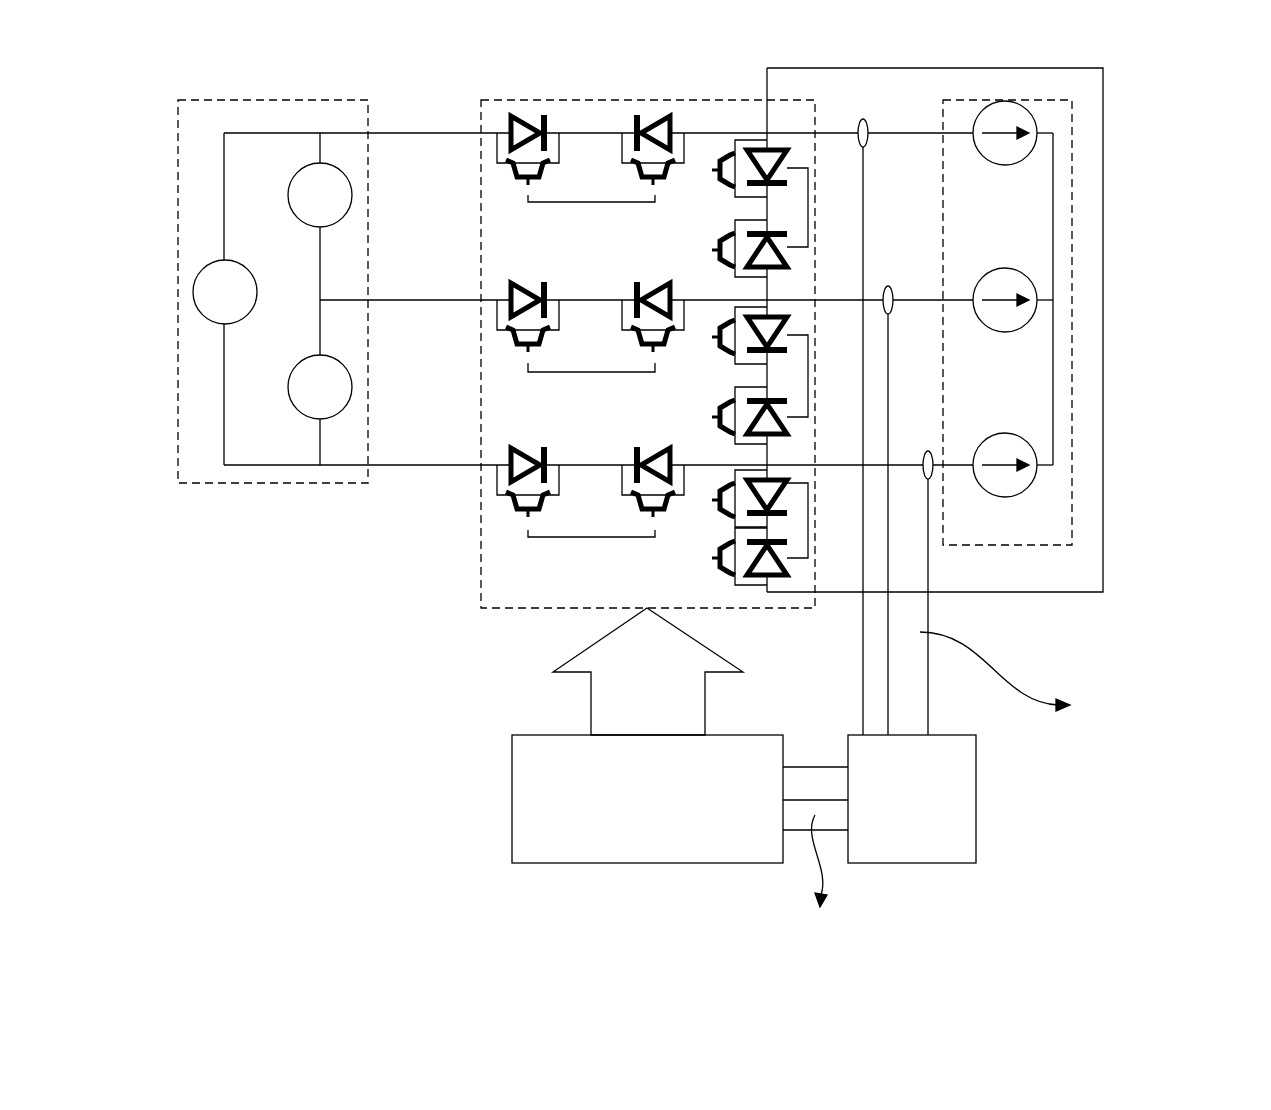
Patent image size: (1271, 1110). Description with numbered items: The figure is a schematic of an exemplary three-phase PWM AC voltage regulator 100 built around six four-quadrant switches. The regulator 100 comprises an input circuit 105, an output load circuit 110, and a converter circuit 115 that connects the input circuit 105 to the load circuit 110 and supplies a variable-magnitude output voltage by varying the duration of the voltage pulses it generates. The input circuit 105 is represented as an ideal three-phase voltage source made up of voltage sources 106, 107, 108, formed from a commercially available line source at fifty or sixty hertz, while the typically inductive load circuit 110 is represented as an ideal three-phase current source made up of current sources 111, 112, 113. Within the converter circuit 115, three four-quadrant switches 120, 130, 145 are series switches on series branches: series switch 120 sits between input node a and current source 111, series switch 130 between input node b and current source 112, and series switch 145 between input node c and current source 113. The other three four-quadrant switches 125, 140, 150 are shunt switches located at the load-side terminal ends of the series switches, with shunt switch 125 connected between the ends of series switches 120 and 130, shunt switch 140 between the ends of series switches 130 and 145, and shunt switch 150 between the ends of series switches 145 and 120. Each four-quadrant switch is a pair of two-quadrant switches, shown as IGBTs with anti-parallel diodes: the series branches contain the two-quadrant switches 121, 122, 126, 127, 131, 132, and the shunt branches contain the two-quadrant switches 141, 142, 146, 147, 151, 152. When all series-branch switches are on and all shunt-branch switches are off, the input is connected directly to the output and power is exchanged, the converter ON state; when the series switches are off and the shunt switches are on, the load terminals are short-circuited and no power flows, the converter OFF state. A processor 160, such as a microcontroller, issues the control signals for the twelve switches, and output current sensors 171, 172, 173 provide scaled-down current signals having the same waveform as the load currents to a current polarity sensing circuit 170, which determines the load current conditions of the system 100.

The three-phase PWM AC voltage regulator 100 is at (1216, 64).
The input circuit 105 is at (277, 100).
The voltage source 106 is at (316, 208).
The voltage source 107 is at (316, 401).
The voltage source 108 is at (237, 305).
The output load circuit 110 is at (1003, 101).
The current source 111 is at (1018, 156).
The current source 112 is at (1010, 297).
The current source 113 is at (1010, 459).
The converter circuit 115 is at (652, 101).
The four-quadrant switch 120 is at (590, 162).
The two-quadrant switch s1 121 is at (653, 142).
The two-quadrant switch s2 122 is at (528, 142).
The four-quadrant switch 125 is at (771, 208).
The two-quadrant switch s5 126 is at (653, 303).
The two-quadrant switch s6 127 is at (528, 303).
The four-quadrant switch 130 is at (590, 322).
The two-quadrant switch s9 131 is at (653, 469).
The two-quadrant switch s10 132 is at (528, 469).
The four-quadrant switch 140 is at (772, 374).
The two-quadrant switch s3 141 is at (740, 170).
The two-quadrant switch s4 142 is at (740, 248).
The four-quadrant switch 145 is at (590, 489).
The two-quadrant switch s7 146 is at (742, 337).
The two-quadrant switch s8 147 is at (742, 416).
The four-quadrant switch 150 is at (764, 527).
The two-quadrant switch s11 151 is at (742, 498).
The two-quadrant switch s12 152 is at (742, 558).
The processor 160 is at (680, 735).
The current polarity sensing circuit 170 is at (912, 799).
The current sensor CSa 171 is at (883, 420).
The current sensor CSb 172 is at (908, 505).
The current sensor CSc 173 is at (912, 584).